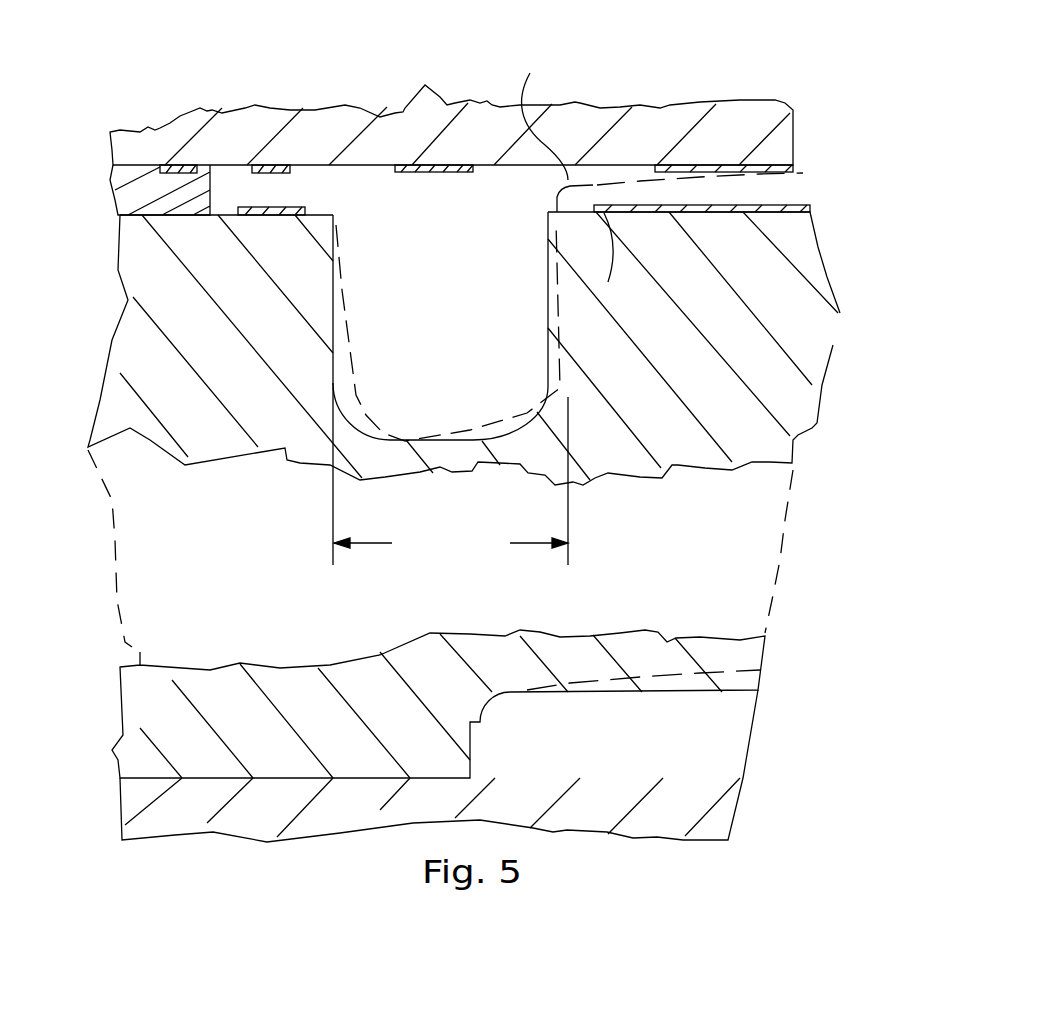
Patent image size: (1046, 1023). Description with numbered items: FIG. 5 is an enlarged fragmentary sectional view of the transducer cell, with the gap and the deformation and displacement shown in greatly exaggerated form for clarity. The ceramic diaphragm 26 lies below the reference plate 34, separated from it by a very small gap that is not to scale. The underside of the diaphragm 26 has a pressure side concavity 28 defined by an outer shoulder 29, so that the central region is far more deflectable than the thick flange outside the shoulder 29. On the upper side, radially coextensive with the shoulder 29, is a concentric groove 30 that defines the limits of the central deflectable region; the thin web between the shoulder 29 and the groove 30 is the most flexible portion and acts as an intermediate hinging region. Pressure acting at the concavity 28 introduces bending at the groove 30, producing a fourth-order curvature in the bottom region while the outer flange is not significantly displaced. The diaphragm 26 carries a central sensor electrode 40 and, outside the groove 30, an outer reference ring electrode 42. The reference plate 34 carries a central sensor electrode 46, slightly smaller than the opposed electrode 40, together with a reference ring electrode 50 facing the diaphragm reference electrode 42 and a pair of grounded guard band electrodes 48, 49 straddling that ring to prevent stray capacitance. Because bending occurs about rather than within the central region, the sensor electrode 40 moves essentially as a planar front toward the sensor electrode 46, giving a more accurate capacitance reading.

The ceramic diaphragm 26 is at (828, 273).
The pressure side concavity 28 is at (722, 691).
The outer shoulder 29 is at (470, 738).
The groove 30 is at (547, 340).
The reference plate 34 is at (797, 138).
The central sensor electrode 40 is at (810, 212).
The outer reference ring electrode 42 is at (275, 213).
The central concentric sensor electrode 46 is at (797, 160).
The guard band electrode 48 is at (175, 165).
The guard band electrode 49 is at (404, 164).
The reference ring electrode 50 is at (268, 167).